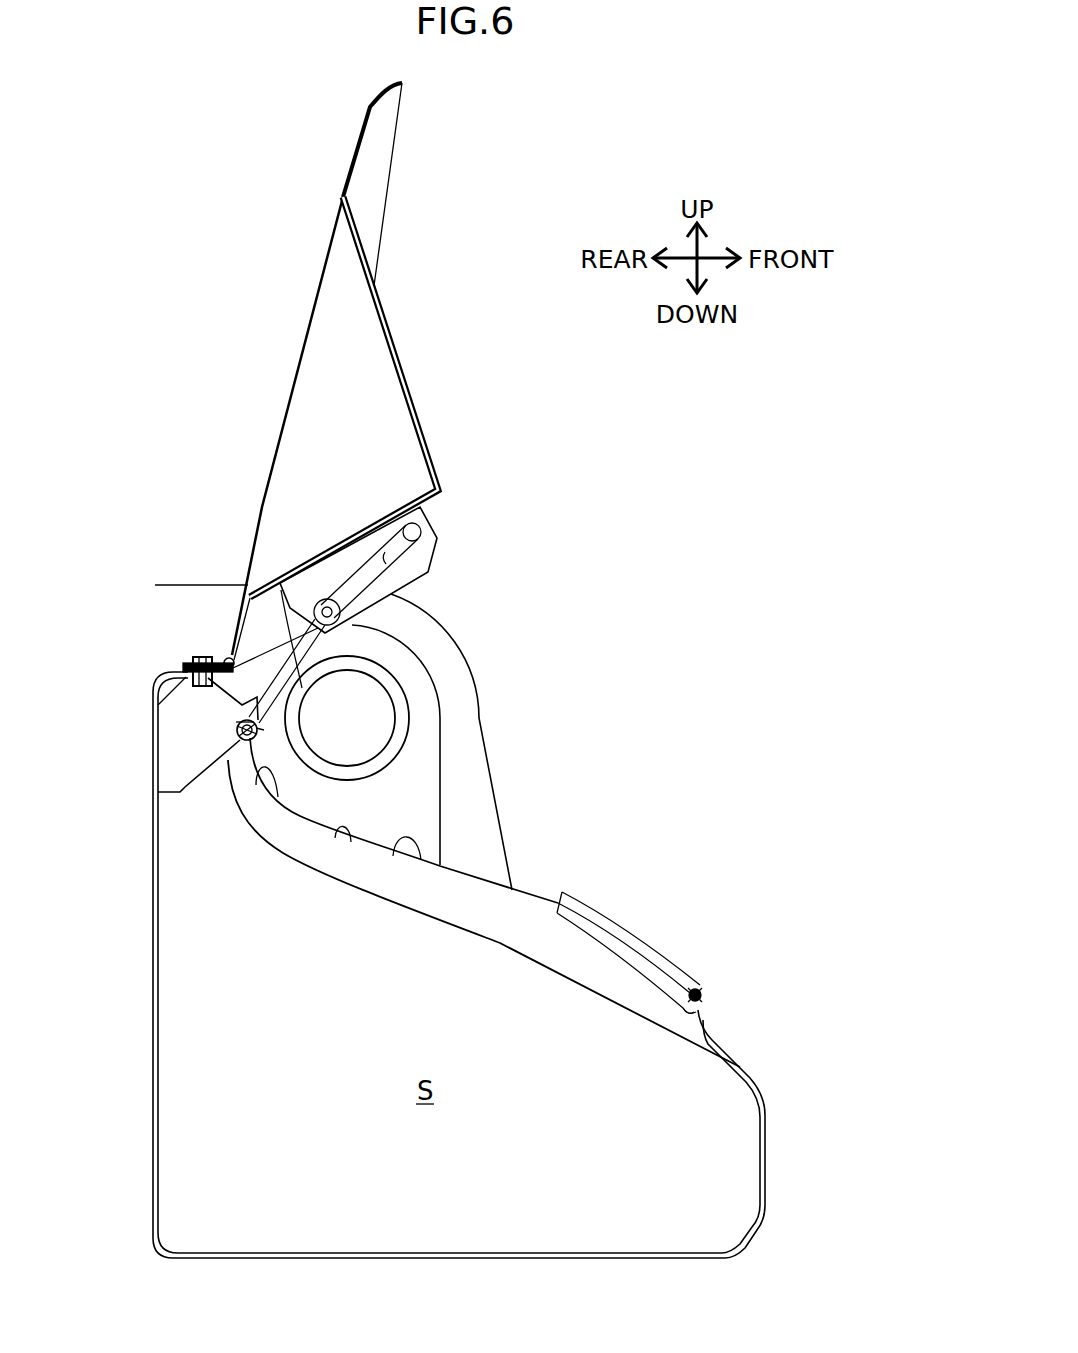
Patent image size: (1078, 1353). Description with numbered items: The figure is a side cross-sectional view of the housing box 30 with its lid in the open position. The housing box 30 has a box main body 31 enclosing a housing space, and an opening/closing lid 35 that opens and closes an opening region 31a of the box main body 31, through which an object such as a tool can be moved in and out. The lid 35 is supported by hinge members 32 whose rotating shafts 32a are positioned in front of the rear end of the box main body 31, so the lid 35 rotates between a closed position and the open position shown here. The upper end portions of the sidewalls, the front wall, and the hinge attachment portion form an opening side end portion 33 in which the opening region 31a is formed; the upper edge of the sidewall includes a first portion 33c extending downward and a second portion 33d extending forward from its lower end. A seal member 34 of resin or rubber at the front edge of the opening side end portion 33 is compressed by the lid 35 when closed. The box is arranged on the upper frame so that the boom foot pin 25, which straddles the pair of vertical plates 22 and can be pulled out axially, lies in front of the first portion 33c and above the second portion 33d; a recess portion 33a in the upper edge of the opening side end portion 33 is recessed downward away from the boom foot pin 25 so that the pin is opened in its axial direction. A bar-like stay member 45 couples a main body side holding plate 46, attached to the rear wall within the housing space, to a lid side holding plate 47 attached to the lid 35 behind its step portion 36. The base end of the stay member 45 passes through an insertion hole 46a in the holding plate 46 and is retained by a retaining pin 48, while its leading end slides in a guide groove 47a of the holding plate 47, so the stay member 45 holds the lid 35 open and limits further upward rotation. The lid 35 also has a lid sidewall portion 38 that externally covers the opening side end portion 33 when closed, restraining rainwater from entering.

The vertical plate 22 is at (481, 722).
The boom foot pin 25 is at (398, 708).
The housing box 30 is at (749, 991).
The box main body 31 is at (766, 1137).
The opening region 31a is at (695, 988).
The hinge member 32 is at (193, 663).
The rotating shaft 32a is at (226, 657).
The opening side end portion 33 is at (527, 893).
The recess portion 33a is at (351, 842).
The first portion 33c is at (278, 797).
The second portion 33d is at (421, 860).
The seal member 34 is at (617, 920).
The opening/closing lid 35 is at (292, 405).
The step portion 36 is at (403, 410).
The lid sidewall portion 38 is at (386, 238).
The stay member 45 is at (246, 592).
The main body side holding plate 46 is at (185, 790).
The insertion hole 46a is at (236, 722).
The lid side holding plate 47 is at (437, 530).
The guide groove 47a is at (425, 570).
The retaining pin 48 is at (238, 733).